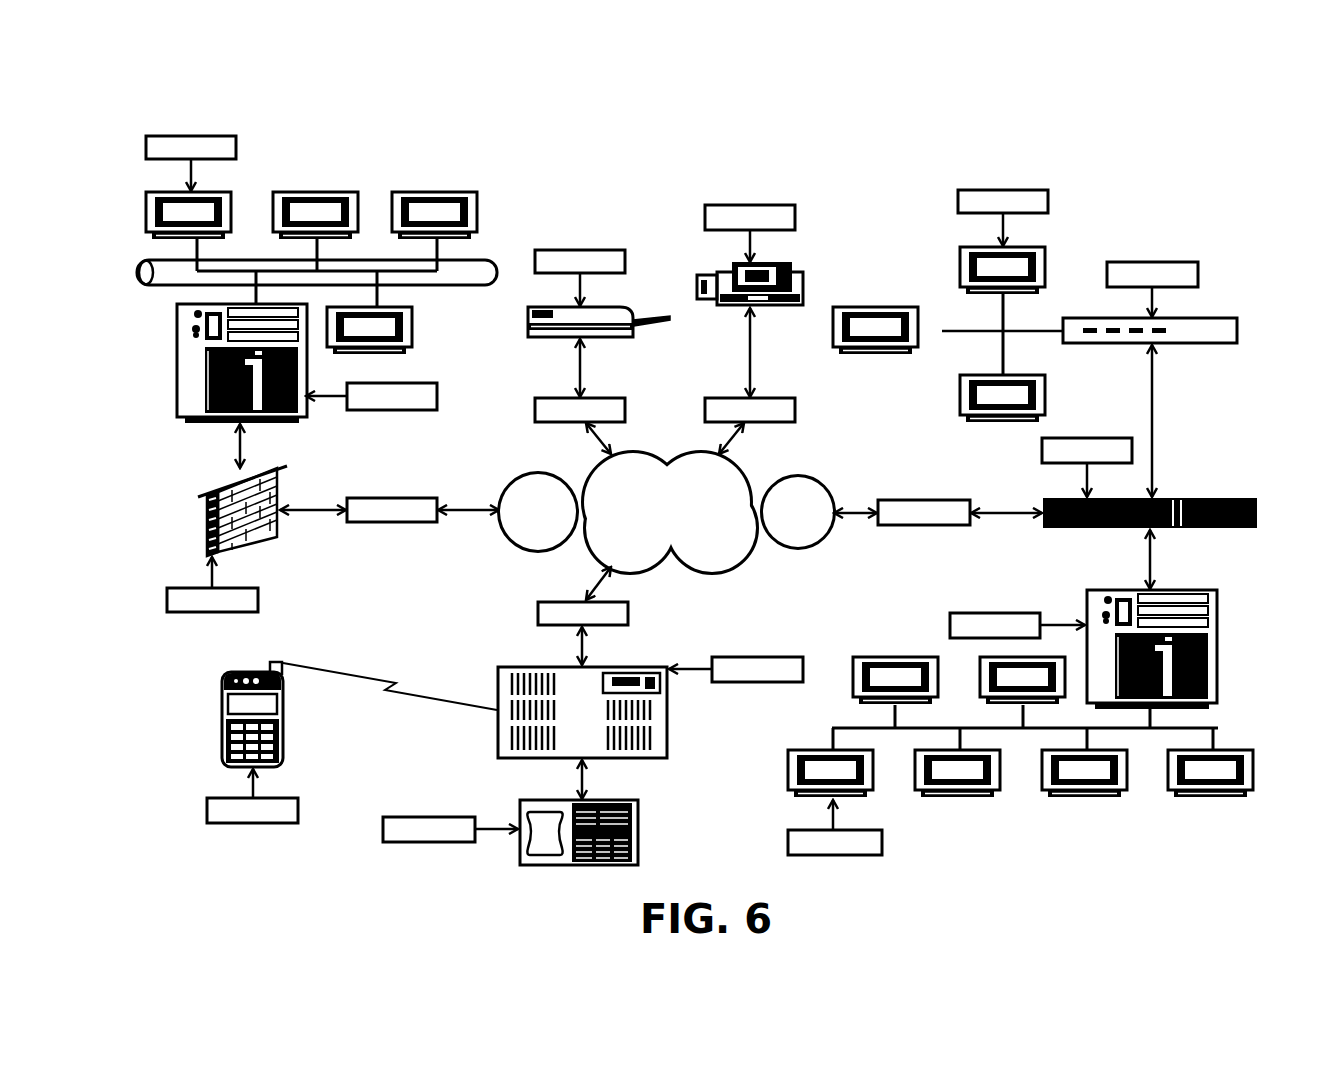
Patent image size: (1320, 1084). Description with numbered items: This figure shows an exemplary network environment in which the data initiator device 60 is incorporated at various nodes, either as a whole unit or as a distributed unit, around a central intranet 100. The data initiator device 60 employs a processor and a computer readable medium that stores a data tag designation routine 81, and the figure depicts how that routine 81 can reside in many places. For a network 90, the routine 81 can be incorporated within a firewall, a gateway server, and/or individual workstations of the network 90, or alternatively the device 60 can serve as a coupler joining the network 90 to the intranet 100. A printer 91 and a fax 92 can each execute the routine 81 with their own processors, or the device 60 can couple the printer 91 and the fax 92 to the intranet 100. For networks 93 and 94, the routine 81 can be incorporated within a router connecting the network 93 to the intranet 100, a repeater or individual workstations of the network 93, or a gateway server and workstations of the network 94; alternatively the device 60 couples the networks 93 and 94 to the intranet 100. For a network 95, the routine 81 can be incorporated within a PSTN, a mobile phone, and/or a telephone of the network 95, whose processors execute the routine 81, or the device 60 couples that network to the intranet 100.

The data initiator device 60 is at (538, 398).
The data tag designation routine 81 is at (208, 136).
The network 90 is at (352, 150).
The printer 91 is at (603, 306).
The fax 92 is at (793, 263).
The network 93 is at (1092, 212).
The network 94 is at (1045, 838).
The network 95 is at (491, 880).
The intranet 100 is at (650, 536).